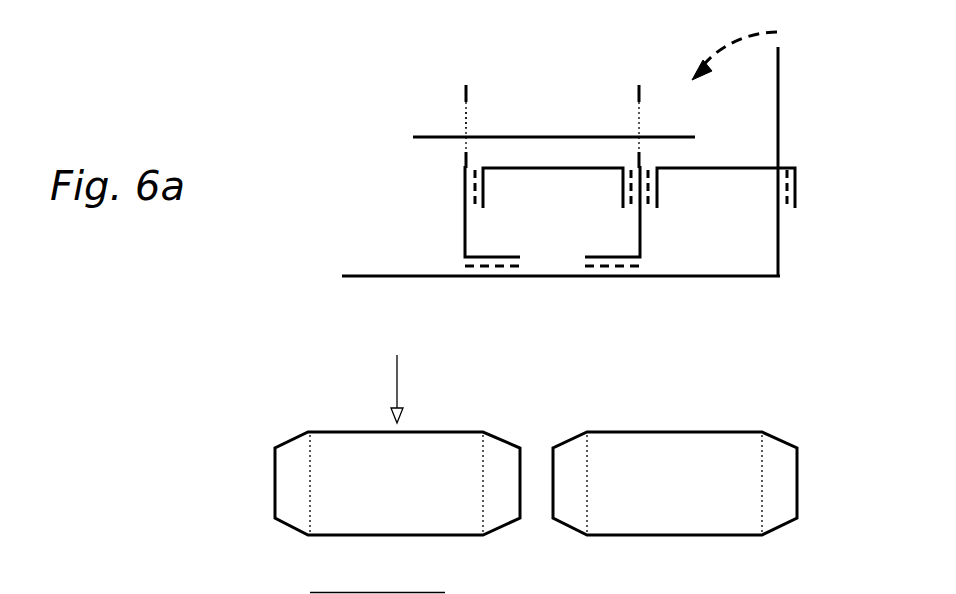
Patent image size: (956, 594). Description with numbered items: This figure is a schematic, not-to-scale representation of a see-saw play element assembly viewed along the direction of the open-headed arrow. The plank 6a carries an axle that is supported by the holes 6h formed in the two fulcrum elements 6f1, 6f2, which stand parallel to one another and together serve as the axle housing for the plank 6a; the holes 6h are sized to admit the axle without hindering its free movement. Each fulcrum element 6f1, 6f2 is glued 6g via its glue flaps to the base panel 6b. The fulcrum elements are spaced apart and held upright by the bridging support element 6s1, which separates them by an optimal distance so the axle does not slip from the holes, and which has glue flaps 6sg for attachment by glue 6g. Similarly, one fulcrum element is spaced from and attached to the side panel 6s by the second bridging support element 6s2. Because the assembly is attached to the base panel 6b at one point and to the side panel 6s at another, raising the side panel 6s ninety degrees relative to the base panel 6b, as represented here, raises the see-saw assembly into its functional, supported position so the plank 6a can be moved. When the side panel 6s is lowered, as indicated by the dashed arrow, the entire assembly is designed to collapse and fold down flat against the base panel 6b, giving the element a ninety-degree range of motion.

The plank 6a is at (528, 139).
The base panel 6b is at (537, 276).
The side panel 6s is at (754, 154).
The fulcrum element 6f1 is at (473, 104).
The fulcrum element 6f2 is at (632, 104).
The hole 6h is at (467, 120).
The glue 6g is at (474, 192).
The bridging support element 6s1 is at (449, 351).
The second bridging support element 6s2 is at (675, 351).
The glue flaps 6sg is at (292, 472).